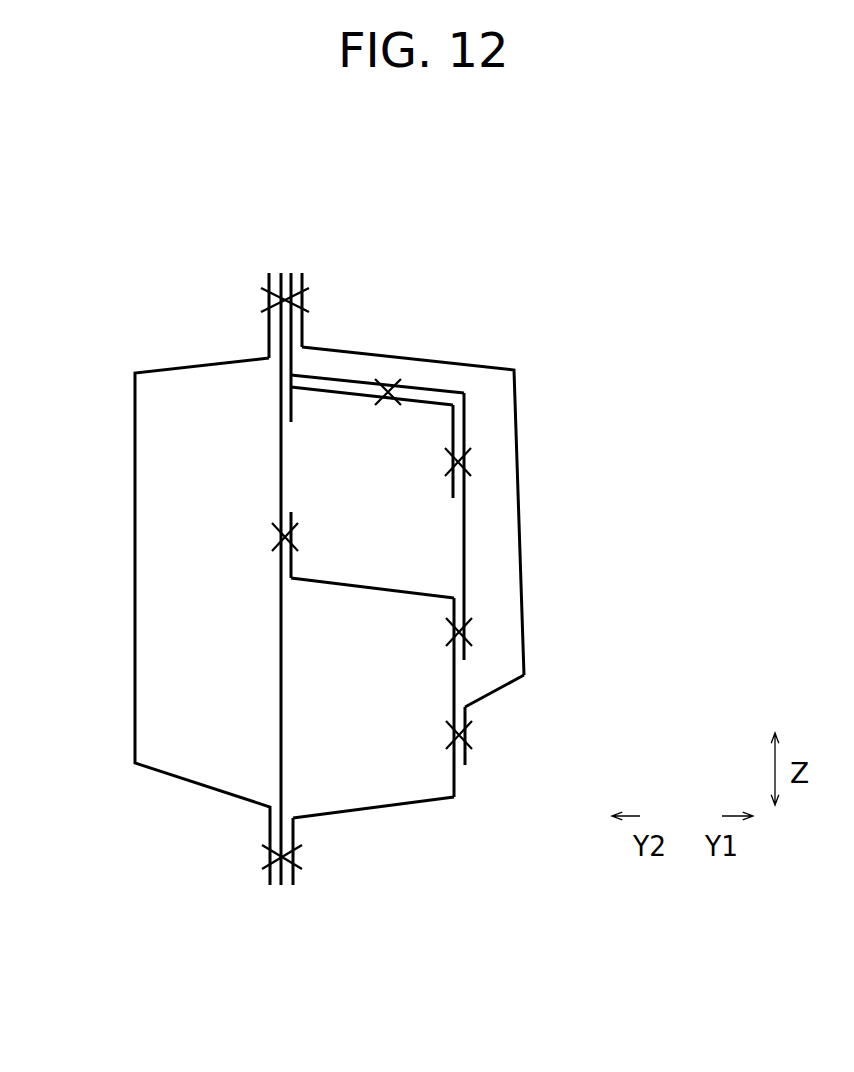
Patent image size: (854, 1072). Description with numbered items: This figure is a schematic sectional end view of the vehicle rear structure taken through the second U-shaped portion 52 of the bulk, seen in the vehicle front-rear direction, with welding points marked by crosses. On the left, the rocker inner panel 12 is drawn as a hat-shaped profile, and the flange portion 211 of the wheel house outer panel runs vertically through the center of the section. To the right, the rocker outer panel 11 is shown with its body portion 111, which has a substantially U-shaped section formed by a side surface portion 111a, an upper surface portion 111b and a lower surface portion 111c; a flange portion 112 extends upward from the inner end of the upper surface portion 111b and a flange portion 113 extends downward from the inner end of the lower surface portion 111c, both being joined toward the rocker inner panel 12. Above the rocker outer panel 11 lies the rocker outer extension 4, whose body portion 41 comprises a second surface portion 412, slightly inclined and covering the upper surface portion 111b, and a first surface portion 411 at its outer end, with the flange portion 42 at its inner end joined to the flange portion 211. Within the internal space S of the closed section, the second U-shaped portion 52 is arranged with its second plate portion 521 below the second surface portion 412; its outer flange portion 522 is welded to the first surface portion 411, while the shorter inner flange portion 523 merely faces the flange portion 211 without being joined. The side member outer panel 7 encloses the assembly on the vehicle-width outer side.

The rocker inner panel 12 is at (133, 597).
The flange portion 211 is at (280, 745).
The flange portion 42 is at (292, 330).
The body portion 41 is at (478, 487).
The first surface portion 411 is at (533, 516).
The second surface portion 412 is at (447, 390).
The rocker outer extension 4 is at (467, 457).
The side member outer panel 7 is at (523, 598).
The second U-shaped portion 52 is at (399, 400).
The second plate portion 521 is at (333, 393).
The flange portion 522 is at (455, 433).
The flange portion 523 is at (287, 408).
The internal space S is at (301, 465).
The rocker outer panel 11 is at (439, 714).
The body portion 111 is at (449, 696).
The side surface portion 111a is at (456, 680).
The upper surface portion 111b is at (400, 593).
The lower surface portion 111c is at (348, 808).
The flange portion 112 is at (300, 567).
The flange portion 113 is at (297, 875).